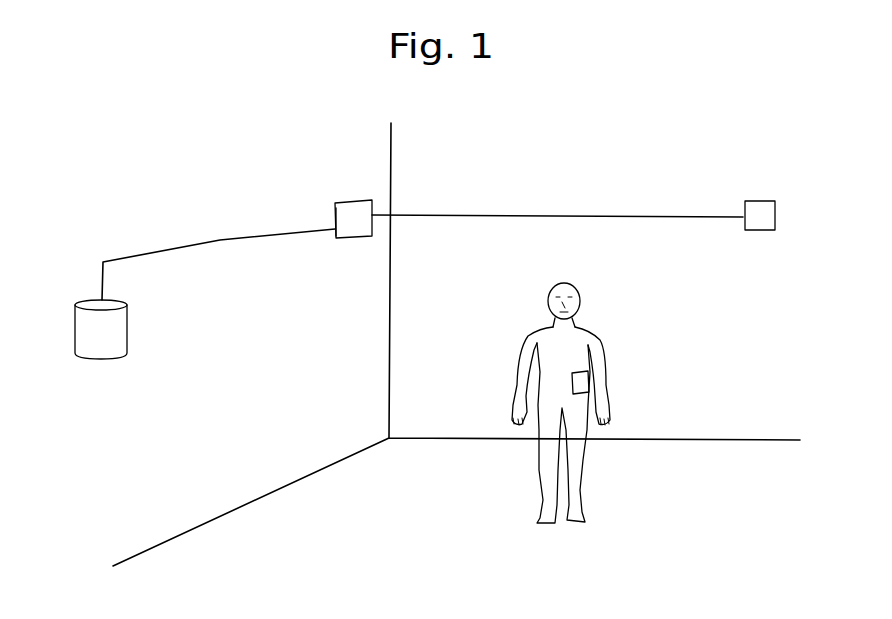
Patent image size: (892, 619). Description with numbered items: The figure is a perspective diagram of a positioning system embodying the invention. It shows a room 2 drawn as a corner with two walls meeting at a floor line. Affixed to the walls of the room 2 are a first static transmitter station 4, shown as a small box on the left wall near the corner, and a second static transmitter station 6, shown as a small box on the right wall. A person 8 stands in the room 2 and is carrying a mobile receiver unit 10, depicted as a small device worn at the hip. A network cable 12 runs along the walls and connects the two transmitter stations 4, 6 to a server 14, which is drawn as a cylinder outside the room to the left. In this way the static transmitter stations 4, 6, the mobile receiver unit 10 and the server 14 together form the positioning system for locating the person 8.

The room 2 is at (352, 543).
The first static transmitter station 4 is at (348, 212).
The second static transmitter station 6 is at (763, 222).
The person 8 is at (536, 326).
The mobile receiver unit 10 is at (584, 386).
The network cable 12 is at (540, 214).
The server 14 is at (118, 325).